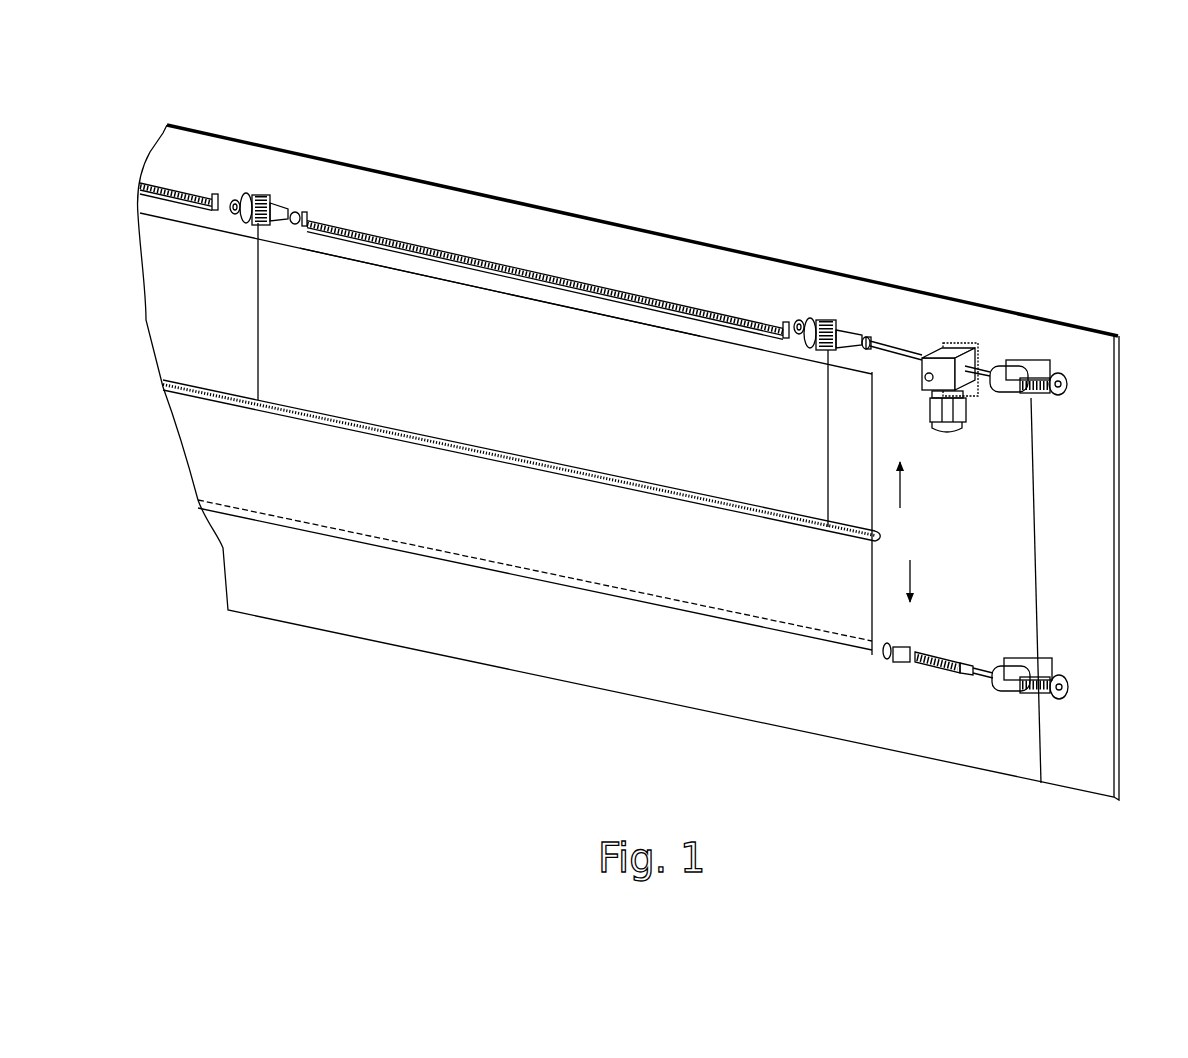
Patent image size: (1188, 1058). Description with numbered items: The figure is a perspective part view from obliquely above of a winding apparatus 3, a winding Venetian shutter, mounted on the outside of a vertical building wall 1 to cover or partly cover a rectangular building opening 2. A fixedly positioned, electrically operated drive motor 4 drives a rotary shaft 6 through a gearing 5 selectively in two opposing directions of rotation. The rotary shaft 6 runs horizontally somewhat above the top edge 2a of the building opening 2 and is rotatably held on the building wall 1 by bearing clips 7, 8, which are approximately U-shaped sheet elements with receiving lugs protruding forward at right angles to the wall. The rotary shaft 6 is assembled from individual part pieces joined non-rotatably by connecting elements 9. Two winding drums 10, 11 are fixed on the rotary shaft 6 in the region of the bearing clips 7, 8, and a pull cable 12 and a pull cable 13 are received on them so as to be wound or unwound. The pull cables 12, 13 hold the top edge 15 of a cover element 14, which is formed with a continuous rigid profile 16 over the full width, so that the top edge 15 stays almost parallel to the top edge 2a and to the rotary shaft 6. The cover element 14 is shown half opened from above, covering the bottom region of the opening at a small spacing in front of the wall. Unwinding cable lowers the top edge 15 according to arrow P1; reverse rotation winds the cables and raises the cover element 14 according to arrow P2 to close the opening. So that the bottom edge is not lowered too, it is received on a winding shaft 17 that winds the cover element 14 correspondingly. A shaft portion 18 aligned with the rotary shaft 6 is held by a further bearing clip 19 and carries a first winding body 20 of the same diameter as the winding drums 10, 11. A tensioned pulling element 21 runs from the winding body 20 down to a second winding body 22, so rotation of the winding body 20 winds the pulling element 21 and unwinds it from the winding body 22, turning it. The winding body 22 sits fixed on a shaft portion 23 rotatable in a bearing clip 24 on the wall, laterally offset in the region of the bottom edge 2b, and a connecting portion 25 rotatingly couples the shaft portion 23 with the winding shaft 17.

The building wall 1 is at (648, 267).
The building opening 2 is at (424, 298).
The top edge of the building opening 2a is at (572, 320).
The bottom edge of the building opening 2b is at (469, 557).
The winding apparatus 3 is at (1062, 246).
The drive motor 4 is at (948, 424).
The gearing 5 is at (940, 360).
The rotary shaft 6 is at (567, 275).
The bearing clip 7 is at (843, 322).
The bearing clip 8 is at (271, 197).
The connecting element 9 is at (222, 186).
The winding drum 10 is at (827, 350).
The winding drum 11 is at (235, 218).
The pull cable 12 is at (827, 413).
The pull cable 13 is at (259, 314).
The cover element 14 is at (729, 513).
The top edge of the cover element 15 is at (547, 453).
The rigid profile 16 is at (883, 540).
The winding shaft 17 is at (872, 660).
The shaft portion 18 is at (1007, 366).
The bearing clip 19 is at (1068, 367).
The first winding body 20 is at (1014, 393).
The pulling element 21 is at (1034, 502).
The second winding body 22 is at (1030, 698).
The shaft portion 23 is at (1000, 695).
The bearing clip 24 is at (1069, 676).
The connecting portion 25 is at (938, 678).
The arrow P1 is at (914, 583).
The arrow P2 is at (902, 486).